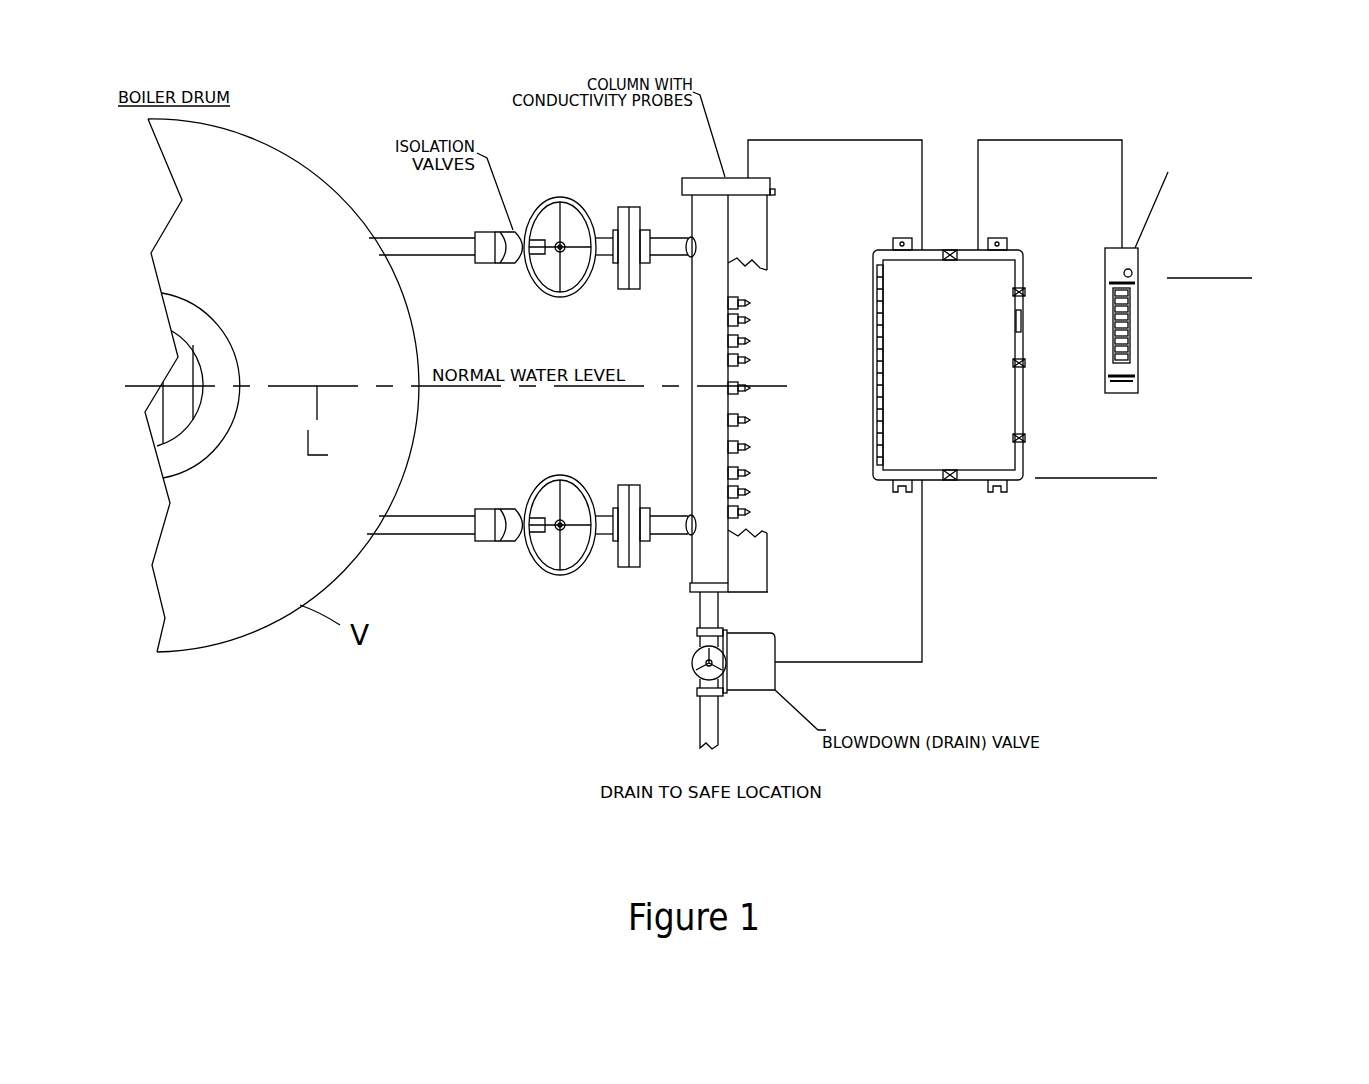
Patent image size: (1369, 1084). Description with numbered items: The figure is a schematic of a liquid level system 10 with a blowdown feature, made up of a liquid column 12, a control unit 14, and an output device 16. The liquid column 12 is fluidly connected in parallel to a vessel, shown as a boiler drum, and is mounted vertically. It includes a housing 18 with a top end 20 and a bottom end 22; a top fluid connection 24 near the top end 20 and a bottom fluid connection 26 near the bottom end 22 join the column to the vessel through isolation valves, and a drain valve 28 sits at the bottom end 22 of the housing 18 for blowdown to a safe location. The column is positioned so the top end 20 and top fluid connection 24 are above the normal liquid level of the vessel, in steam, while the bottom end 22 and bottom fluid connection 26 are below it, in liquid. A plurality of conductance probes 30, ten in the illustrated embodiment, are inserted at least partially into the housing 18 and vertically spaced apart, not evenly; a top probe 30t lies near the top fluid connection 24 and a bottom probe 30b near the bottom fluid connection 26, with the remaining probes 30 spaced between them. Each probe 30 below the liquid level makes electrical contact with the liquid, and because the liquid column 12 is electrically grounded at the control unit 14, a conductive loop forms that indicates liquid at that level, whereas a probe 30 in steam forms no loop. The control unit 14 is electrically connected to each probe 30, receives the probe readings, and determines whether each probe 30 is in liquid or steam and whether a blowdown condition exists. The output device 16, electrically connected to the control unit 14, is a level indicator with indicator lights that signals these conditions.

The liquid level system 10 is at (1072, 645).
The liquid column 12 is at (724, 342).
The control unit 14 is at (958, 224).
The output device 16 is at (1161, 249).
The housing 18 is at (690, 415).
The top end 20 is at (770, 177).
The bottom end 22 is at (768, 592).
The top fluid connection 24 is at (665, 237).
The bottom fluid connection 26 is at (670, 543).
The drain valve 28 is at (697, 680).
The top probe 30t is at (743, 305).
The probes 30 is at (743, 362).
The bottom probe 30b is at (745, 512).